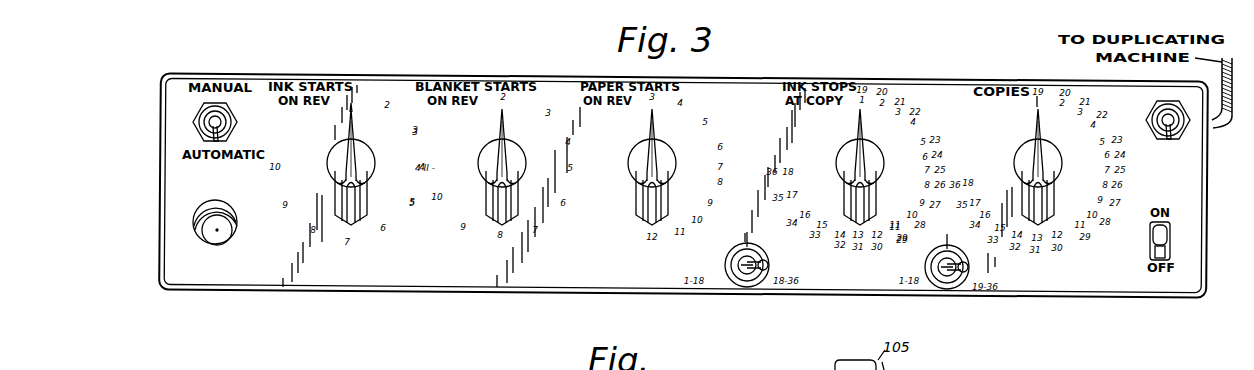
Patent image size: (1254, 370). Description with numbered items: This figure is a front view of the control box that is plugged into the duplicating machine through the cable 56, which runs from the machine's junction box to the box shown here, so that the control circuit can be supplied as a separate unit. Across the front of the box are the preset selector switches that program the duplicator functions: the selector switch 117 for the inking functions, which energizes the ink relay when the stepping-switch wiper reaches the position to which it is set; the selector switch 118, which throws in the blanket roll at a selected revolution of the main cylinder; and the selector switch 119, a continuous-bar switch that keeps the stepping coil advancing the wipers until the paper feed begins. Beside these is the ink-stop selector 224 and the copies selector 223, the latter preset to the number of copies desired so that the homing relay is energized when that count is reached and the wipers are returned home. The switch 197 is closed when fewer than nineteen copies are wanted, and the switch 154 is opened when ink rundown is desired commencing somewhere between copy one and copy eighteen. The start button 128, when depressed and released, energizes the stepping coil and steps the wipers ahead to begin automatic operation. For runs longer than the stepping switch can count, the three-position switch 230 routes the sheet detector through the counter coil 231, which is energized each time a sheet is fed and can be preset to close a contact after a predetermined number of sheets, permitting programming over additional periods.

The selector switch for the inking functions 117 is at (338, 150).
The selector switch for the blanket roll 118 is at (490, 155).
The selector switch for the paper feed mechanism 119 is at (638, 155).
The ink stops at copy control knob 224 is at (848, 152).
The contact of the homing relay 223 is at (1023, 160).
The counter coil 231 is at (237, 122).
The switch 230 is at (220, 245).
The switch 154 is at (724, 267).
The switch 197 is at (968, 275).
The start button 128 is at (1168, 139).
The cable 56 is at (1224, 132).